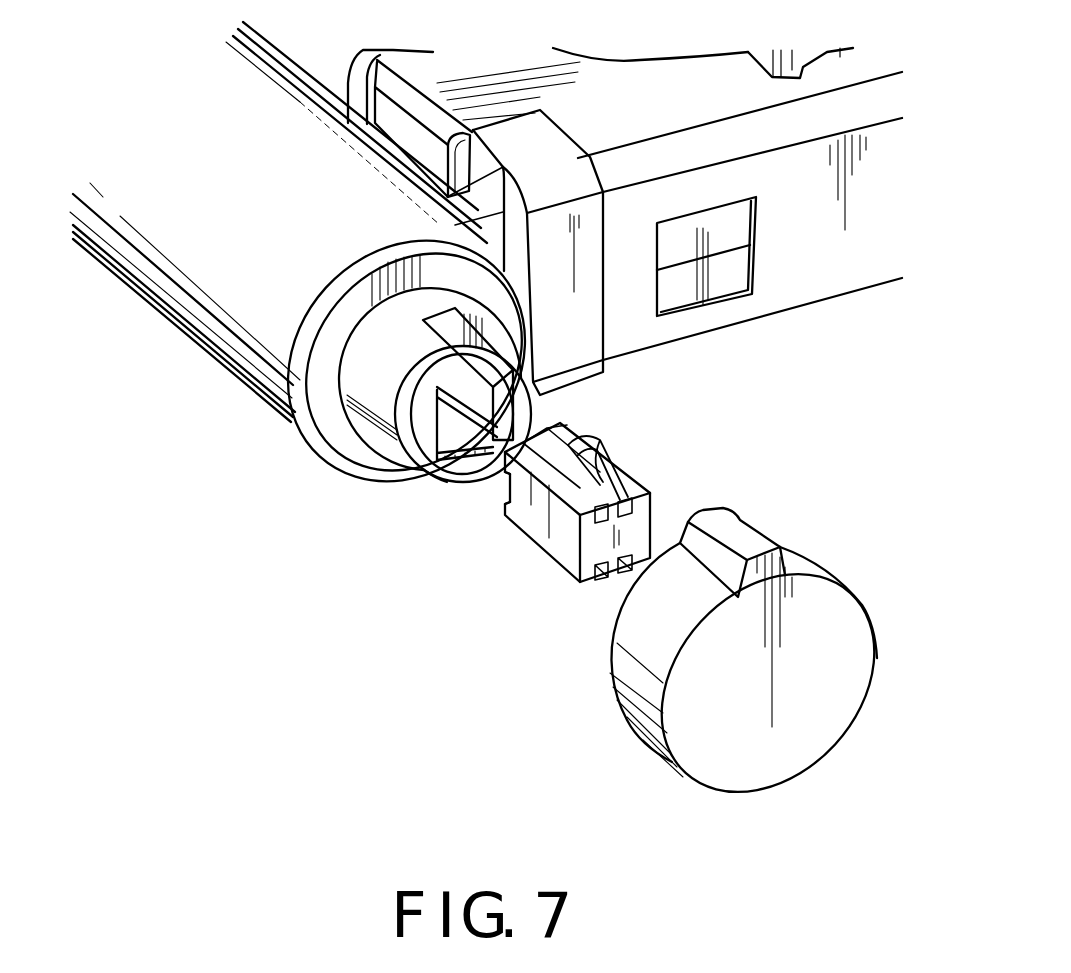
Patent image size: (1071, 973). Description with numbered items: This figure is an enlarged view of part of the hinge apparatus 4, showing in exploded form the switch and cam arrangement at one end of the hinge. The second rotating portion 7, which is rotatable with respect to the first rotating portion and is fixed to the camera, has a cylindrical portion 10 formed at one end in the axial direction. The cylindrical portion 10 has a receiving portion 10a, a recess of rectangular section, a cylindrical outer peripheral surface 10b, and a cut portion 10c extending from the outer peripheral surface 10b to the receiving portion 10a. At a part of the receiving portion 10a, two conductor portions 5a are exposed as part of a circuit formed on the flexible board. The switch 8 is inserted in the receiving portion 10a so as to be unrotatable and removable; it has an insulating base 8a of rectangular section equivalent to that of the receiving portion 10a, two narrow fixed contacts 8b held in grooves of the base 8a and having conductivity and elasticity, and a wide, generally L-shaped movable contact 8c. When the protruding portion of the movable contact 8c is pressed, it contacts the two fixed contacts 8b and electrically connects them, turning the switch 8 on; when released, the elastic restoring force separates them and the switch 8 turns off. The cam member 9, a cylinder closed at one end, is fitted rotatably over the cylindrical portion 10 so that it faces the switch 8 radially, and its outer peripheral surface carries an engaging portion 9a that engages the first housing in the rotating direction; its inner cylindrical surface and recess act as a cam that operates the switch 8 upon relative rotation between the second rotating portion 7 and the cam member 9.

The hinge apparatus 4 is at (203, 358).
The conductor portions 5a is at (458, 462).
The second rotating portion 7 is at (143, 205).
The switch 8 is at (633, 465).
The insulating base 8a is at (520, 495).
The fixed contacts 8b is at (630, 482).
The movable contact 8c is at (587, 445).
The cam member 9 is at (607, 688).
The engaging portion 9a is at (733, 523).
The cylindrical portion 10 is at (358, 438).
The receiving portion 10a is at (420, 440).
The outer peripheral surface 10b is at (318, 447).
The cut portion 10c is at (573, 370).